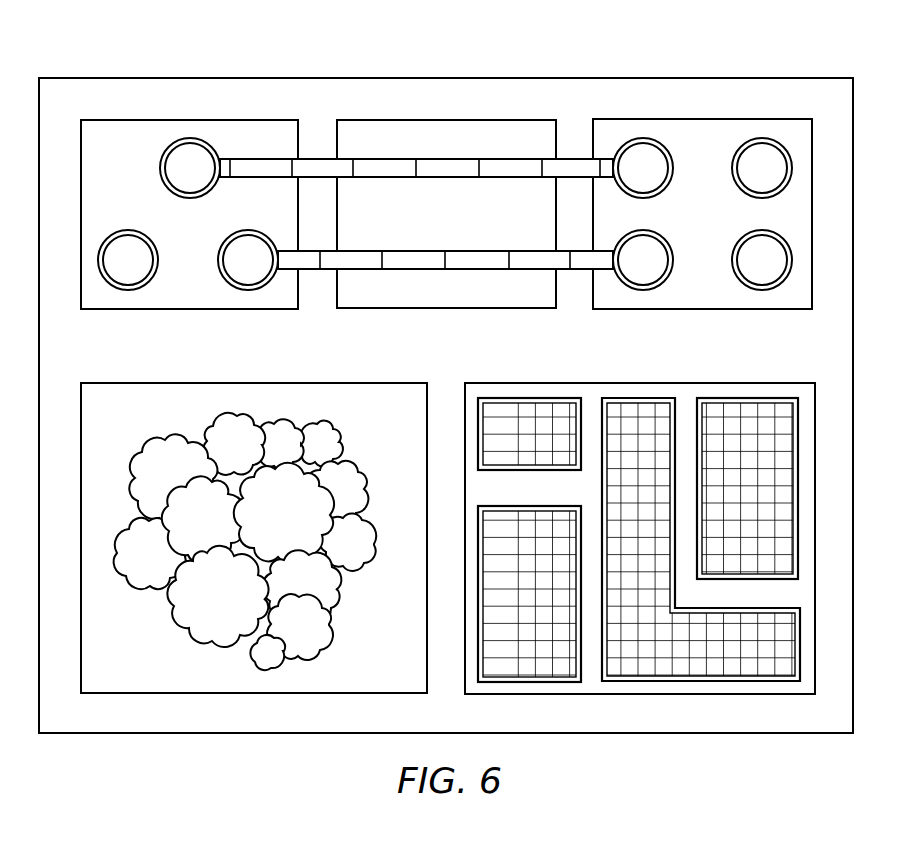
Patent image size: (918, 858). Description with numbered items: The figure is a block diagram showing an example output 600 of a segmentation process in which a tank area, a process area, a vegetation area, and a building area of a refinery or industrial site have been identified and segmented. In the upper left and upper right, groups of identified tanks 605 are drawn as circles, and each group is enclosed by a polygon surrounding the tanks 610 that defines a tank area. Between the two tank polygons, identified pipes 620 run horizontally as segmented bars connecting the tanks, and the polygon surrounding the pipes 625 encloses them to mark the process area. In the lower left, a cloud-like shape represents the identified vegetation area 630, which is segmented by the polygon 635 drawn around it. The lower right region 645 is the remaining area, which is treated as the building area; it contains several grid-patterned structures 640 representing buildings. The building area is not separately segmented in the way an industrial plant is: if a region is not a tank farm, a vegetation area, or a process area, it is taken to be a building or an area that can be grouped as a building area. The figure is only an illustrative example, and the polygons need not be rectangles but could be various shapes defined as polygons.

The user interface / game board 600 is at (148, 36).
The identified tanks 605 is at (165, 155).
The polygon surrounding the tanks 610 is at (192, 119).
The pipes 620 is at (445, 158).
The polygon surrounding the pipes 625 is at (446, 119).
The vegetation area 630 is at (160, 453).
The polygon segmenting the vegetation area 635 is at (262, 383).
The grid element 640 is at (745, 398).
The building area 645 is at (752, 383).